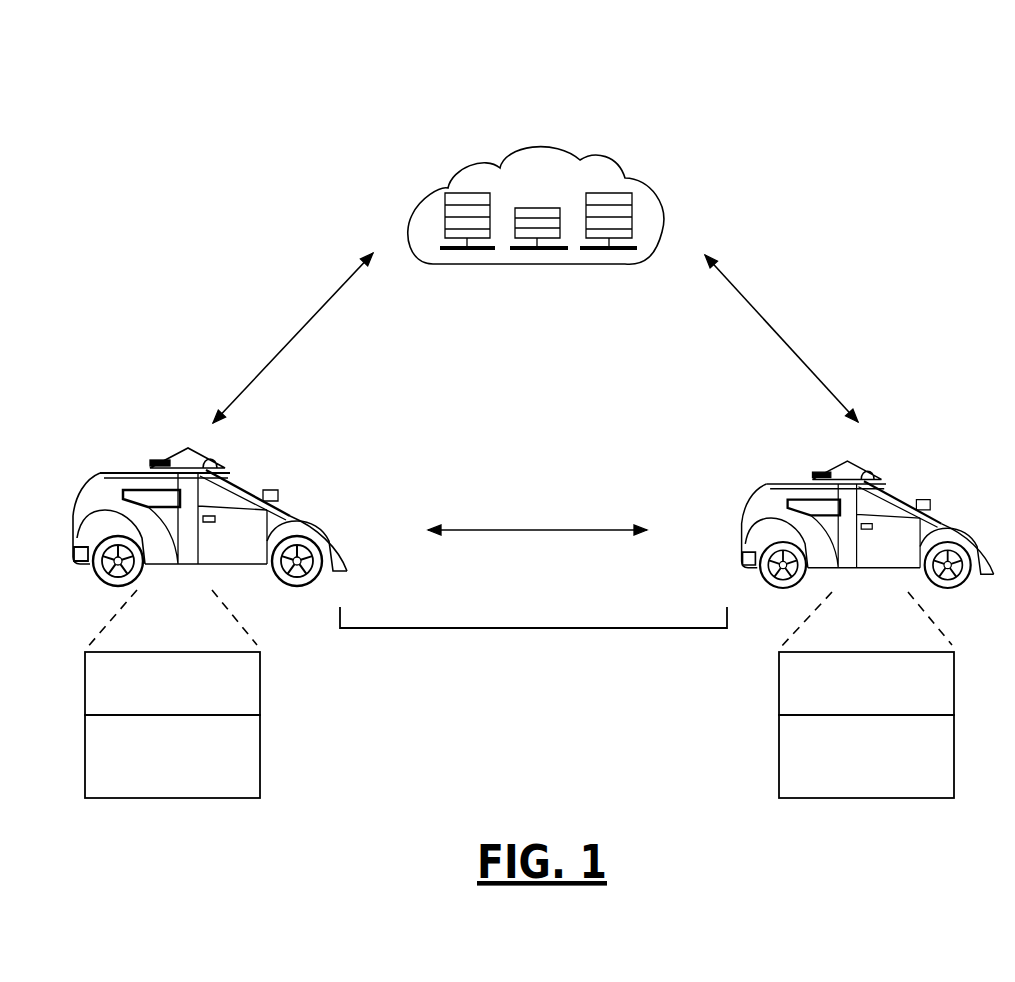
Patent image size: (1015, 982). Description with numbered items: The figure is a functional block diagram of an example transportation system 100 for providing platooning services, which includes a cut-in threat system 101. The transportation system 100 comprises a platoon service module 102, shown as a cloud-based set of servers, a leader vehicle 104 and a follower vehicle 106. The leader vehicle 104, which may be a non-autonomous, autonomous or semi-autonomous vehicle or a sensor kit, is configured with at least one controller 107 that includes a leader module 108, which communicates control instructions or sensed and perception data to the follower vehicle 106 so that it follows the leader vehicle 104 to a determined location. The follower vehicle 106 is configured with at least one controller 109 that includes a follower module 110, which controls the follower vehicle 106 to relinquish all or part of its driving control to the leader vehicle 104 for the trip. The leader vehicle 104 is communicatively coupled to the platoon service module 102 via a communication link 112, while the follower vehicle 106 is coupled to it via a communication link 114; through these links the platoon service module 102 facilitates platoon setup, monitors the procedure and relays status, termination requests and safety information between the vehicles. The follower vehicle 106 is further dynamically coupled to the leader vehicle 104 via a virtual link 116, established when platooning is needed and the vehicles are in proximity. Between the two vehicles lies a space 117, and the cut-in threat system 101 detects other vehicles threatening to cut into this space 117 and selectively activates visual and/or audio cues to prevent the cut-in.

The transportation system 100 is at (943, 85).
The cut-in threat system 101 is at (322, 227).
The platoon service module 102 is at (536, 206).
The leader vehicle 104 is at (770, 490).
The follower vehicle 106 is at (107, 478).
The controller 107 is at (866, 756).
The leader module 108 is at (866, 683).
The controller 109 is at (172, 756).
The follower module 110 is at (172, 683).
The communication link 112 is at (775, 328).
The communication link 114 is at (282, 352).
The virtual link 116 is at (515, 527).
The space 117 is at (588, 632).